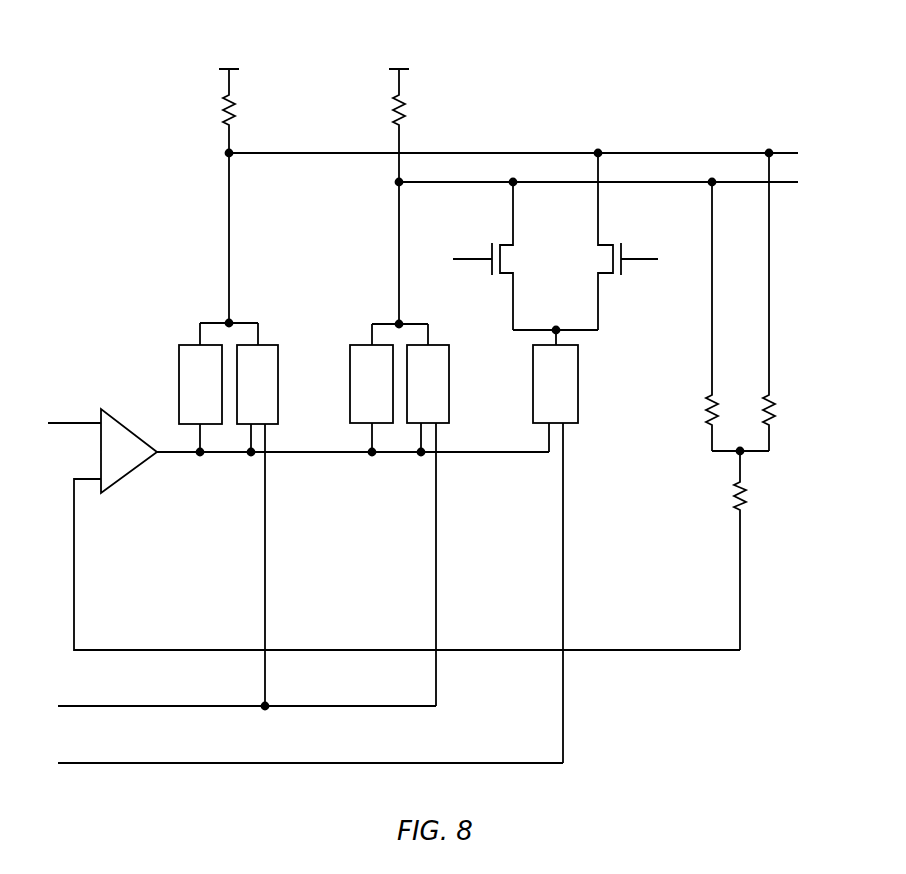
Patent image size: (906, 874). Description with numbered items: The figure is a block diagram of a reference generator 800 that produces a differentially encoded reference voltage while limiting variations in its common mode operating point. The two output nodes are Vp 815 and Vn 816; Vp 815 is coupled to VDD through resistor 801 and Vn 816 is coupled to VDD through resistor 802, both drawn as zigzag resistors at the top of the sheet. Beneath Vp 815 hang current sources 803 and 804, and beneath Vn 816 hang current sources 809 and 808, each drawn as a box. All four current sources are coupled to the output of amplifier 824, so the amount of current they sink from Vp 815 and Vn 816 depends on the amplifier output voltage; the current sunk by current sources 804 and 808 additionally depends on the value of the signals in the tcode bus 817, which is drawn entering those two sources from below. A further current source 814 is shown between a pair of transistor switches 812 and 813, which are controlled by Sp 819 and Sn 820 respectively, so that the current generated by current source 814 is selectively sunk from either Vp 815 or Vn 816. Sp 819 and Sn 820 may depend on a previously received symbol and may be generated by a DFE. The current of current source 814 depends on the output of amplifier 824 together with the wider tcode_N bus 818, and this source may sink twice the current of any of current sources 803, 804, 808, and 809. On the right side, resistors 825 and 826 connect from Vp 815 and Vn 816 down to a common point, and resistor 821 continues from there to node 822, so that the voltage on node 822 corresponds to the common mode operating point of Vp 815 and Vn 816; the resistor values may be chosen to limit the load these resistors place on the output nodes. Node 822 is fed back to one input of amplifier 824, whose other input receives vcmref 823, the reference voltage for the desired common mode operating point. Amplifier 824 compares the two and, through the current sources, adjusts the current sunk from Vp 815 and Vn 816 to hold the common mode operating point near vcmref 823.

The reference generator 800 is at (637, 82).
The resistor 801 is at (240, 103).
The resistor 802 is at (410, 103).
The current source 803 is at (178, 362).
The current source 804 is at (275, 344).
The current source 808 is at (442, 344).
The current source 809 is at (349, 396).
The transistor switch 812 is at (500, 243).
The transistor switch 813 is at (610, 243).
The current source 814 is at (580, 368).
The Vp 815 is at (513, 142).
The Vn 816 is at (598, 172).
The tcode n:1 817 is at (247, 709).
The tcode_N 2n:1 818 is at (310, 766).
The Sp 819 is at (468, 259).
The Sn 820 is at (647, 259).
The resistor 821 is at (739, 500).
The node 822 is at (657, 650).
The vcmref 823 is at (67, 424).
The amplifier 824 is at (128, 422).
The resistor 825 is at (711, 406).
The resistor 826 is at (773, 428).